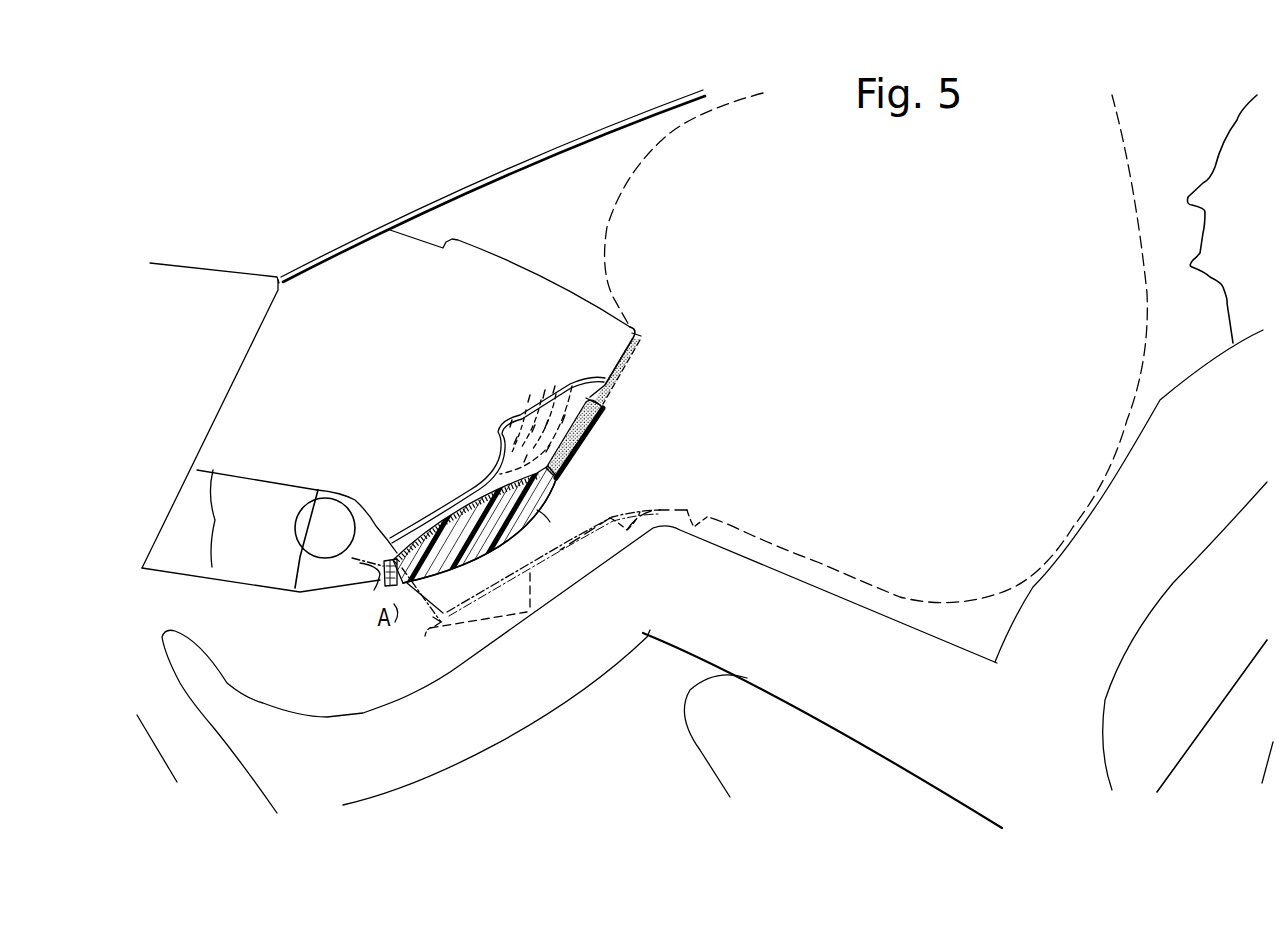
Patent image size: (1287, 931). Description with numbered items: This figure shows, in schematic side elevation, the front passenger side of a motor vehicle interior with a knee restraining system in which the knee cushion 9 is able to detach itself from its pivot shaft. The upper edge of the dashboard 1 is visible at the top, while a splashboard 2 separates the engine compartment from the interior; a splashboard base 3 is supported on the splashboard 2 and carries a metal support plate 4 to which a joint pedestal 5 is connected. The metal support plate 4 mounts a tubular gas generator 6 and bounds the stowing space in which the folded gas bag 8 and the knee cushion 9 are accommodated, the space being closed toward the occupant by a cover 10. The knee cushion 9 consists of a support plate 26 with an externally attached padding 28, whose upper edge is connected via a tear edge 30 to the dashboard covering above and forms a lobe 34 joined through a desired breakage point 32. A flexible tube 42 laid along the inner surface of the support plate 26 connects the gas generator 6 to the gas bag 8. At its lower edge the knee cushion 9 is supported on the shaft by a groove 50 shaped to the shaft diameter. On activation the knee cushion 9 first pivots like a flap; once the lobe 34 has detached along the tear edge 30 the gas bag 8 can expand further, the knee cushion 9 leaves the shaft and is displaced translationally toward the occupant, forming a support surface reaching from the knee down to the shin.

The upper edge of the dashboard 1 is at (637, 332).
The splashboard 2 is at (228, 392).
The splashboard base 3 is at (261, 531).
The metal support plate 4 is at (295, 518).
The joint pedestal 5 is at (376, 578).
The tubular gas generator 6 is at (303, 540).
The gas bag 8 is at (517, 420).
The knee cushion 9 is at (563, 497).
The cover 10 is at (612, 381).
The support plate 26 is at (433, 528).
The padding 28 is at (537, 510).
The tear edge 30 is at (603, 403).
The desired breakage point 32 is at (571, 473).
The lobe 34 is at (588, 398).
The flexible tube 42 is at (475, 497).
The groove 50 is at (398, 551).